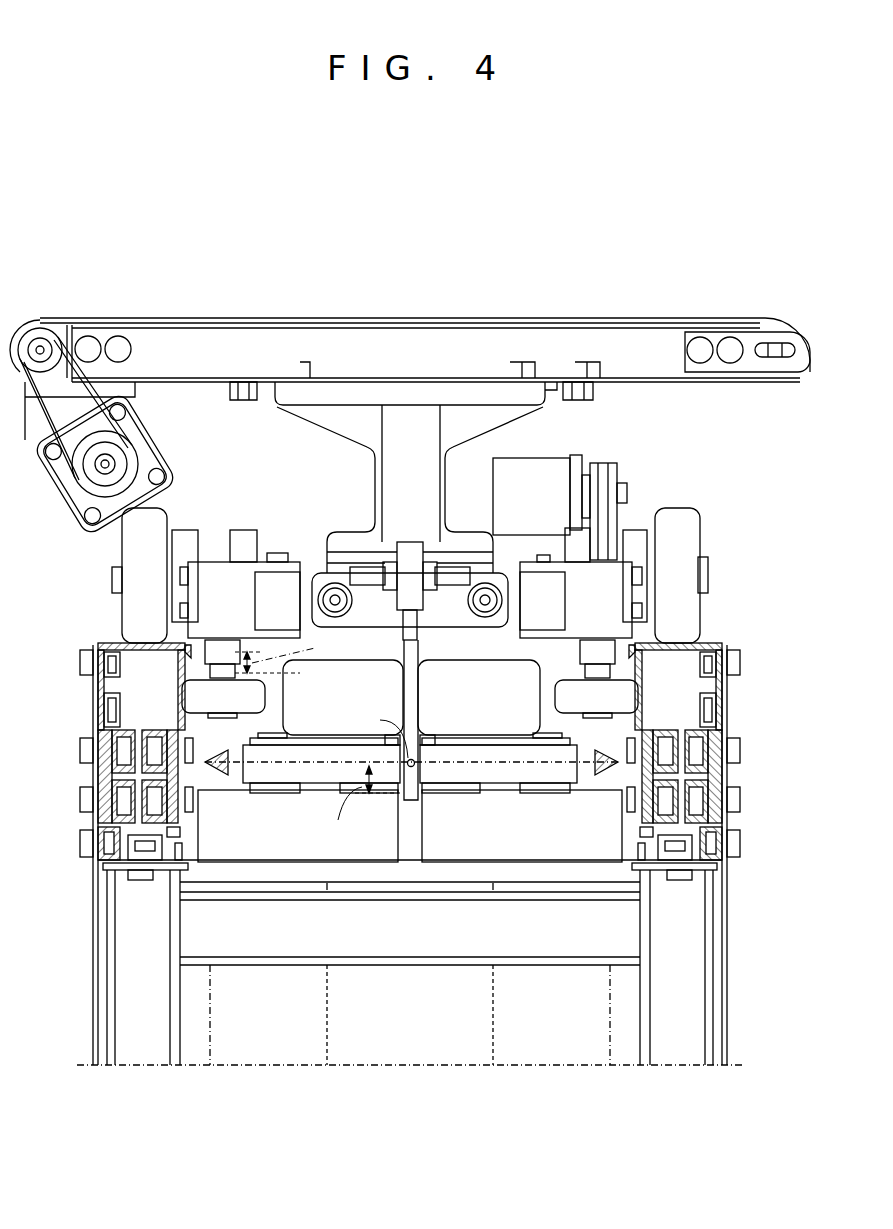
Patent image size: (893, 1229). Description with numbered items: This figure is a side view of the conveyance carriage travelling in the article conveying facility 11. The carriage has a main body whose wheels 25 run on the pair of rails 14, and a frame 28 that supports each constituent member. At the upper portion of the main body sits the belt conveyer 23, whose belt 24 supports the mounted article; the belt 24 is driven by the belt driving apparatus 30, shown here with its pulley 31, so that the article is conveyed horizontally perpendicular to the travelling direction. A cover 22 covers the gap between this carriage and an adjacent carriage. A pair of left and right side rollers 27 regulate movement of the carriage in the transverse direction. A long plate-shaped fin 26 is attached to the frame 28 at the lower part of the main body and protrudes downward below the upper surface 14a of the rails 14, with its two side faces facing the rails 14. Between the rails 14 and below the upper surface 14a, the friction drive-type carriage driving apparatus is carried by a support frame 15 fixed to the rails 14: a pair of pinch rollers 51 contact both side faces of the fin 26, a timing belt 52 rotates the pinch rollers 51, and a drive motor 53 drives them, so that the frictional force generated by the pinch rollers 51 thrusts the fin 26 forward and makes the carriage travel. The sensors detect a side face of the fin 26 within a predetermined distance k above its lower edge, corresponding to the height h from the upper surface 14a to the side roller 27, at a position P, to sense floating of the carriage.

The component mounting apparatus 11 is at (44, 252).
The cover 22 is at (545, 314).
The belt 24 is at (655, 314).
The belt conveyer 23 is at (768, 310).
The belt driving apparatus 30 is at (172, 457).
The motor pulley 31 is at (105, 464).
The frame 28 is at (342, 541).
The wheels 25 is at (147, 527).
The fin 26 is at (411, 802).
The rails 14 is at (113, 642).
The upper surface 14a is at (144, 686).
The side rollers 27 is at (193, 695).
The pinch rollers 51 is at (358, 668).
The timing belt 52 is at (247, 757).
The support frame 15 is at (383, 872).
The drive motor 53 is at (313, 1023).